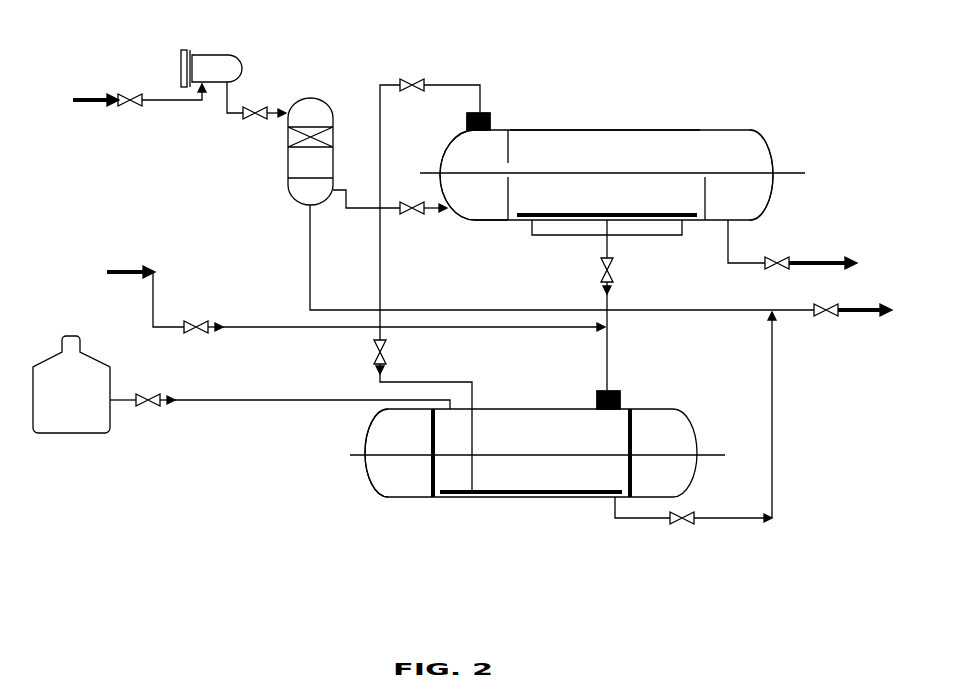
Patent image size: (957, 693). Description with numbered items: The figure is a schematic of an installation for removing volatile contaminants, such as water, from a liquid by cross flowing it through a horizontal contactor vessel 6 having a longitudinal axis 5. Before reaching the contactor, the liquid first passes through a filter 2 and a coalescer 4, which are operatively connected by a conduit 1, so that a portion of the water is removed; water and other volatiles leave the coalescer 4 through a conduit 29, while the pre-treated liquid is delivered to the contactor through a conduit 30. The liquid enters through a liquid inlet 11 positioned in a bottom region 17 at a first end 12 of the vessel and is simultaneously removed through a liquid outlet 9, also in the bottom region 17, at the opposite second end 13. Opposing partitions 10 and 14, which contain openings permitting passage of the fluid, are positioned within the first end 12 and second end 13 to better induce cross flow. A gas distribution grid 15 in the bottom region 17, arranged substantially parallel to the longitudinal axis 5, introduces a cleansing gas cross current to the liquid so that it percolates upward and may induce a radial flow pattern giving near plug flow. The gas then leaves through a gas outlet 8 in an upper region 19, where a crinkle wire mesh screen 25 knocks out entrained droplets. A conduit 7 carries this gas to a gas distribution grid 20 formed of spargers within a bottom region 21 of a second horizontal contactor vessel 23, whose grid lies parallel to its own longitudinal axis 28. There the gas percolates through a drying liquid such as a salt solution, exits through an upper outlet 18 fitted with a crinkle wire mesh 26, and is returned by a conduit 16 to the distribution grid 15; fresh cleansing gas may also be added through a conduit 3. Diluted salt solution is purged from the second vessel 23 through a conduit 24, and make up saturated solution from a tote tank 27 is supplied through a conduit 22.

The conduit 1 is at (232, 102).
The filter 2 is at (211, 68).
The conduit 3 is at (245, 327).
The coalescer 4 is at (310, 151).
The longitudinal axis 5 is at (795, 165).
The horizontal contactor vessel 6 is at (620, 132).
The conduit 7 is at (455, 82).
The gas outlet 8 is at (480, 112).
The liquid outlet 9 is at (730, 225).
The partition 10 is at (507, 142).
The liquid inlet 11 is at (449, 212).
The first end 12 is at (467, 158).
The second end 13 is at (752, 190).
The partition 14 is at (705, 143).
The gas distribution grid 15 is at (553, 209).
The conduit 16 is at (613, 295).
The bottom region 17 is at (490, 214).
The upper outlet 18 is at (613, 392).
The upper region 19 is at (562, 142).
The gas distribution grid 20 is at (495, 492).
The bottom region 21 is at (398, 490).
The conduit 22 is at (340, 405).
The second horizontal contactor vessel 23 is at (395, 500).
The conduit 24 is at (777, 455).
The crinkle wire mesh screen 25 is at (492, 121).
The crinkle wire mesh 26 is at (598, 399).
The tote tank 27 is at (71, 384).
The longitudinal axis 28 is at (708, 455).
The conduit 29 is at (311, 256).
The conduit 30 is at (360, 211).